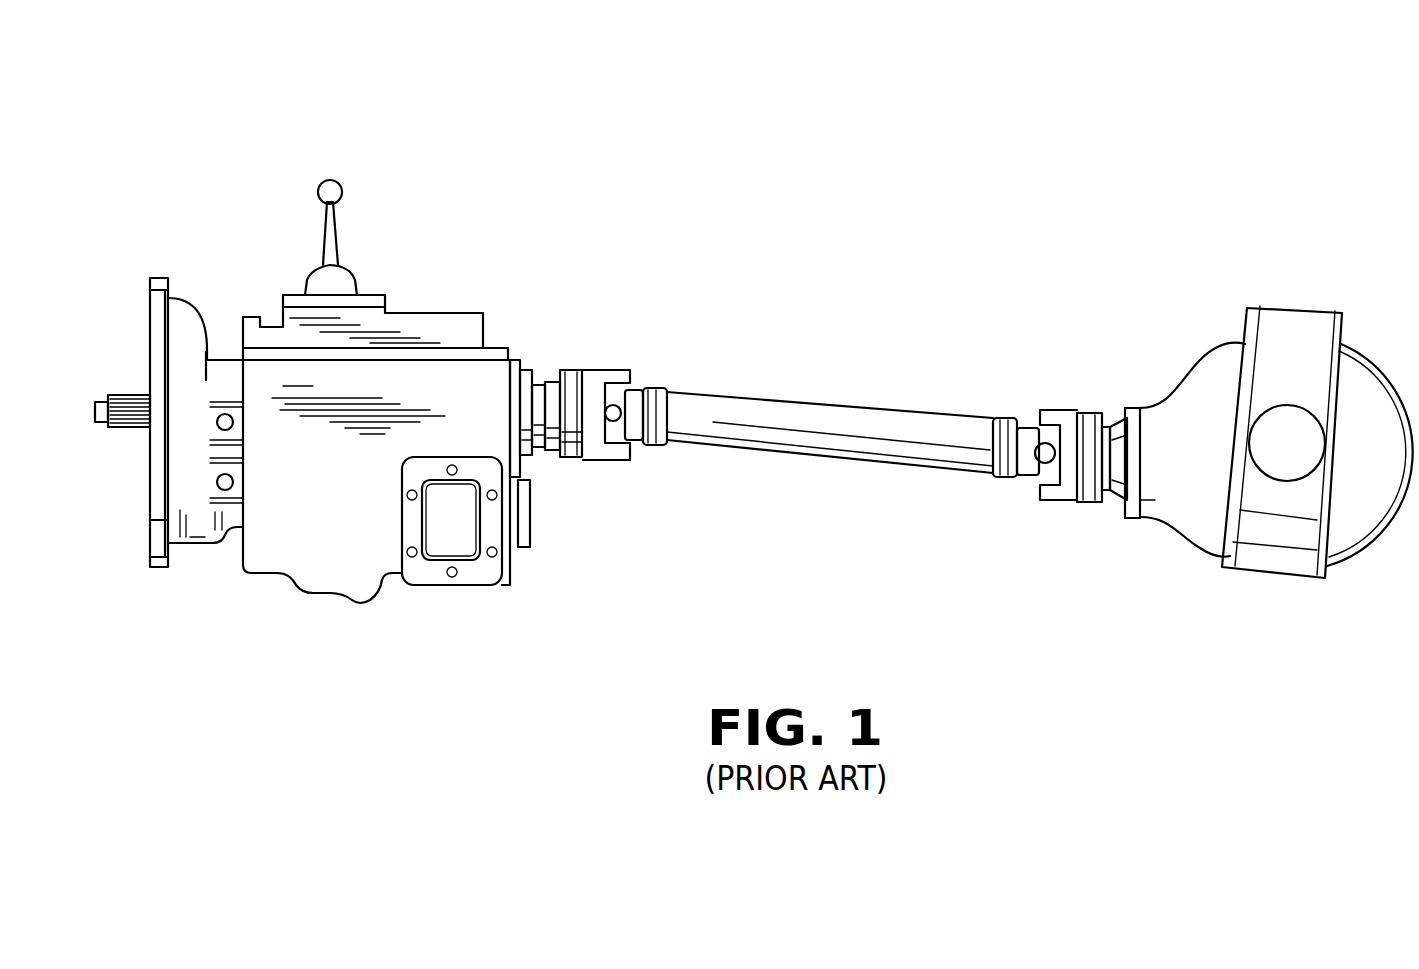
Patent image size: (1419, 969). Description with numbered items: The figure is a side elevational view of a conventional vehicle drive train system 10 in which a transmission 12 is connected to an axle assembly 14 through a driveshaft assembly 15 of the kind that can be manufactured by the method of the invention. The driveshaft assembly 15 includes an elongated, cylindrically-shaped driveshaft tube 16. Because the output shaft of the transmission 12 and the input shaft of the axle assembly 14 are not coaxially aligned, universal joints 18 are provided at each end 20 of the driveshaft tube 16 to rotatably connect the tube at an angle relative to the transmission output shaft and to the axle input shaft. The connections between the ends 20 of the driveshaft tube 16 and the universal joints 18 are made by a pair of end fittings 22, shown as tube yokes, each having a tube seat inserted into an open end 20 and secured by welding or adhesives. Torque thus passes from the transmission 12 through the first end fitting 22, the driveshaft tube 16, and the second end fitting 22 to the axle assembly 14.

The vehicle drive train system 10 is at (388, 128).
The transmission 12 is at (320, 582).
The axle assembly 14 is at (1268, 565).
The driveshaft assembly 15 is at (1103, 287).
The driveshaft tube 16 is at (820, 447).
The universal joint 18 is at (600, 368).
The end of the driveshaft tube 20 is at (673, 433).
The end fitting 22 is at (633, 397).